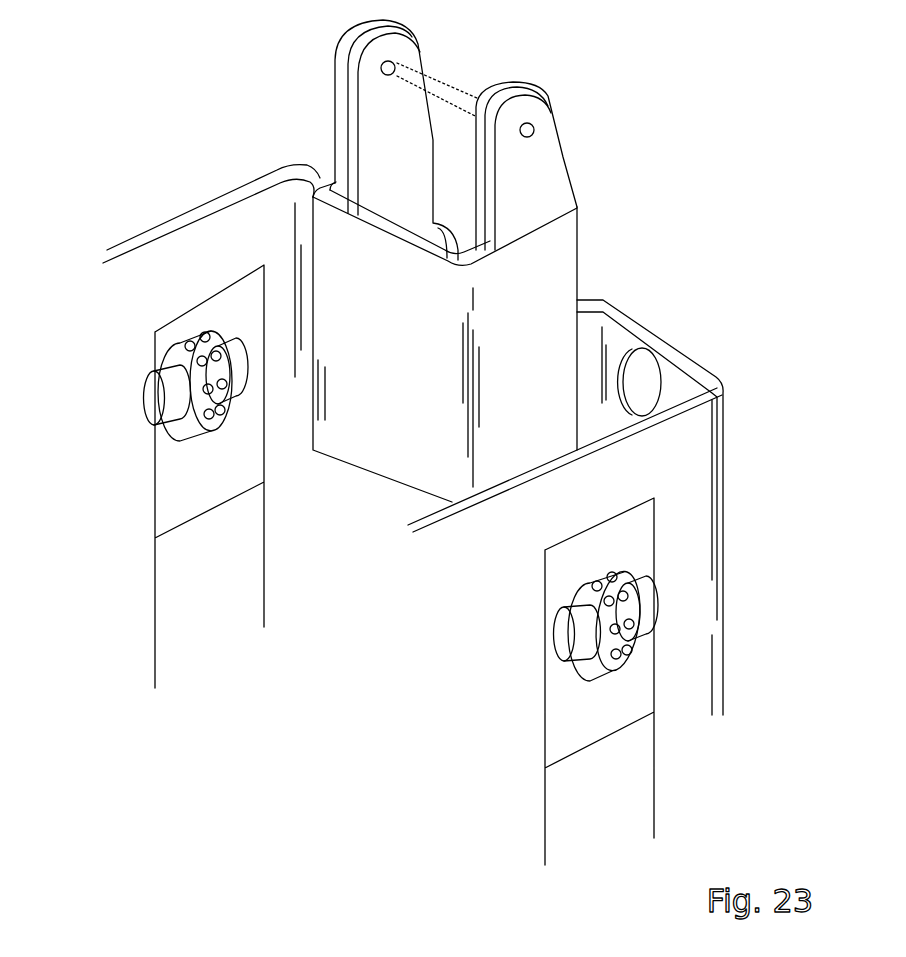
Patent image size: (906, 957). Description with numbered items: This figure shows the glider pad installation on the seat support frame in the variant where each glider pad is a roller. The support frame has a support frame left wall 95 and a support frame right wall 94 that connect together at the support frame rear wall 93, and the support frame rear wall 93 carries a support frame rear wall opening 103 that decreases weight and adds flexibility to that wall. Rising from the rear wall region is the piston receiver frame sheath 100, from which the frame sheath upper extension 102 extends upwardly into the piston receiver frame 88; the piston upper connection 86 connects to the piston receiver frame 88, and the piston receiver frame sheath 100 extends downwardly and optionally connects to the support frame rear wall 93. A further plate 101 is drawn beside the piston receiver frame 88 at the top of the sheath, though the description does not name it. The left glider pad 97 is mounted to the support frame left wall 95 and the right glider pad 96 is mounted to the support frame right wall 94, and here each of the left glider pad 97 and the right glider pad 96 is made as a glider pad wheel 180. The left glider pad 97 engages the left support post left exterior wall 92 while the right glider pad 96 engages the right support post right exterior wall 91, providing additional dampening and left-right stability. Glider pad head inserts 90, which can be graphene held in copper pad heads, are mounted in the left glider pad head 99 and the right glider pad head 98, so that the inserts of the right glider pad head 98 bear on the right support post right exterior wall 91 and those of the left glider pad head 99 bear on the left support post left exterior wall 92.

The piston upper connection 86 is at (433, 82).
The piston receiver frame 88 is at (505, 80).
The glider pad head inserts 90 is at (207, 422).
The right support post right exterior wall 91 is at (175, 508).
The left support post left exterior wall 92 is at (590, 718).
The support frame rear wall 93 is at (615, 333).
The support frame right wall 94 is at (180, 257).
The support frame left wall 95 is at (525, 515).
The right glider pad 96 is at (150, 398).
The left glider pad 97 is at (645, 617).
The right glider pad head 98 is at (228, 418).
The left glider pad head 99 is at (567, 600).
The piston receiver frame sheath 100 is at (557, 290).
The left mounting plate 101 is at (338, 143).
The frame sheath upper extension 102 is at (535, 130).
The support frame rear wall opening 103 is at (655, 373).
The glider pad wheel 180 is at (165, 333).